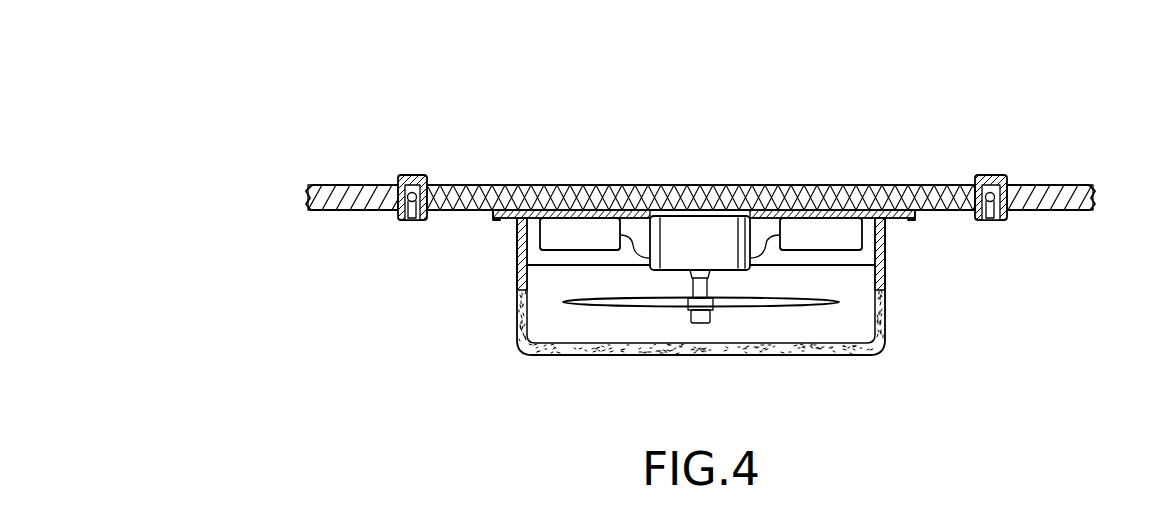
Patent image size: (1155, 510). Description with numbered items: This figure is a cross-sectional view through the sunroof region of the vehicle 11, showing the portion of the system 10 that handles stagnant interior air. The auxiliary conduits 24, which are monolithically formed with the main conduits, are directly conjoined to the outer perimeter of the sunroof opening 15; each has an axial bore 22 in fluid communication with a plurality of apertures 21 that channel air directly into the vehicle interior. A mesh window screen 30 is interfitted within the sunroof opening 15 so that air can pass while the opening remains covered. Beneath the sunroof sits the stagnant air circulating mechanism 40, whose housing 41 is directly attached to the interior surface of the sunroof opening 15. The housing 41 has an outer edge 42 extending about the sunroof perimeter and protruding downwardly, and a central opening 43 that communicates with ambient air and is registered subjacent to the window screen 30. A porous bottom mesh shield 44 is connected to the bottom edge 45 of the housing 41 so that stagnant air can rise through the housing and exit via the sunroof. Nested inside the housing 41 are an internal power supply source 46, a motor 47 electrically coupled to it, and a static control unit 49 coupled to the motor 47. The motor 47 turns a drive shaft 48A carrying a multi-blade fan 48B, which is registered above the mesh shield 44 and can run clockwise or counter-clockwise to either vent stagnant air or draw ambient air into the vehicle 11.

The system 10 is at (352, 108).
The vehicle 11 is at (349, 185).
The sunroof opening 15 is at (555, 185).
The apertures 21 is at (412, 220).
The axial bore 22 is at (430, 185).
The auxiliary conduits 24 is at (412, 175).
The window screens 30 is at (780, 185).
The stagnant air circulating mechanism 40 is at (815, 185).
The housing 41 is at (643, 185).
The outer edge 42 is at (493, 218).
The central opening 43 is at (722, 215).
The bottom mesh shield 44 is at (848, 355).
The bottom edge 45 is at (517, 290).
The internal power supply source 46 is at (600, 233).
The motor 47 is at (720, 253).
The drive shaft 48A is at (705, 290).
The multi-blade fan 48B is at (708, 315).
The static control unit 49 is at (840, 187).